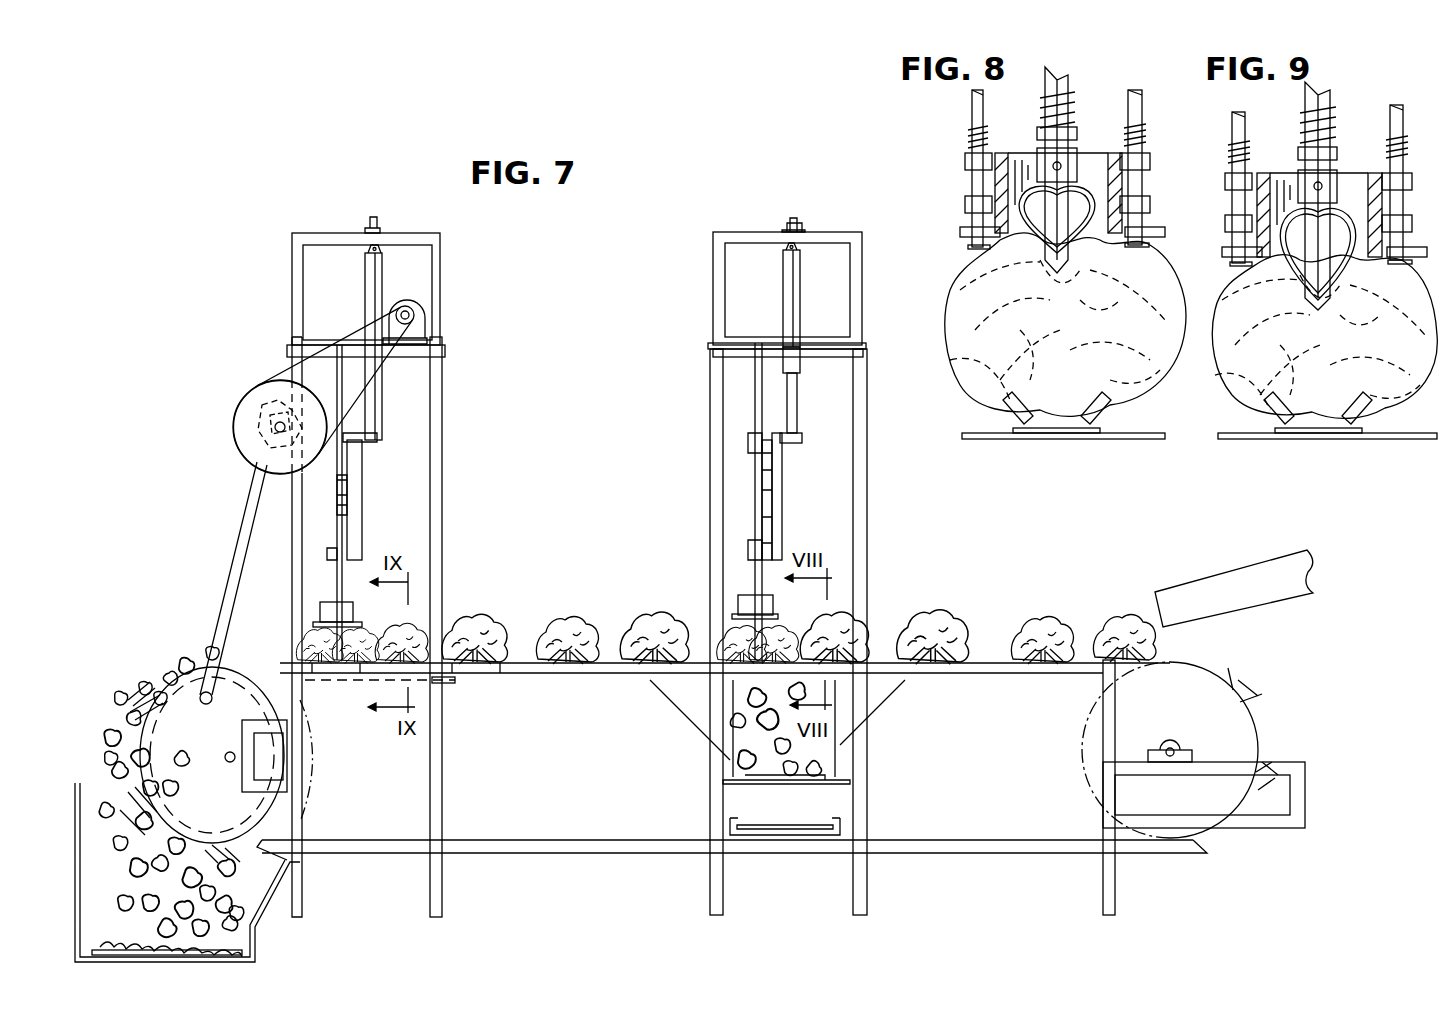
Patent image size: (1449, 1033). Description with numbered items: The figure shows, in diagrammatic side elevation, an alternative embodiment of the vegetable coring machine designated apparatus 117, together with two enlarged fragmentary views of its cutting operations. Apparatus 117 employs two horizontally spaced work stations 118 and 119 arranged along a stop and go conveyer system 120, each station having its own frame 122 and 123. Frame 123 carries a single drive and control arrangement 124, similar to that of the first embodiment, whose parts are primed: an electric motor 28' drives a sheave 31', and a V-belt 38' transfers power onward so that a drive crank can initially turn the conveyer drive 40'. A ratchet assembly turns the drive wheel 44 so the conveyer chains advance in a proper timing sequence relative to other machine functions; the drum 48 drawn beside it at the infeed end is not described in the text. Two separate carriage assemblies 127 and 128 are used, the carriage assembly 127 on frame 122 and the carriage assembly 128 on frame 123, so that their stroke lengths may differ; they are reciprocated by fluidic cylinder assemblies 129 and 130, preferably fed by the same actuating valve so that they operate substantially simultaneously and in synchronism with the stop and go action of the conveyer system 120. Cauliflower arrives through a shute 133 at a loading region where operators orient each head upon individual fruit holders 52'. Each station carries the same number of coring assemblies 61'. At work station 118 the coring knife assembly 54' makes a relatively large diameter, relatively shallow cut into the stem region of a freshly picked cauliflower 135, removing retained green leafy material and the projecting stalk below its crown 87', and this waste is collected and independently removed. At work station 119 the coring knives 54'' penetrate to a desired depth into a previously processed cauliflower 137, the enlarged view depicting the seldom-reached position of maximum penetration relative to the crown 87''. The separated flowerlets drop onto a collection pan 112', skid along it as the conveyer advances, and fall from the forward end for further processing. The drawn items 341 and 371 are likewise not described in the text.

In FIG. 7, the electric motor 28' is at (405, 300).
In FIG. 7, the sheave 31' is at (375, 380).
In FIG. 7, the V-belt 38' is at (335, 472).
In FIG. 7, the conveyer drive 40' is at (216, 583).
In FIG. 7, the drive wheel 44 is at (145, 732).
In FIG. 7, the waste drum 48 is at (228, 760).
In FIG. 7, the fruit holder 52' is at (781, 618).
In FIG. 8, the fruit holder 52' is at (1069, 413).
In FIG. 9, the fruit holder 52' is at (1327, 414).
In FIG. 8, the coring knife assembly 54' is at (1109, 219).
In FIG. 9, the coring knives 54'' is at (1267, 254).
In FIG. 7, the coring assembly 61' is at (725, 501).
In FIG. 8, the coring assembly 61' is at (1035, 170).
In FIG. 9, the coring assembly 61' is at (1296, 196).
In FIG. 8, the crown 87' is at (1009, 174).
In FIG. 9, the crown 87'' is at (1279, 187).
In FIG. 7, the collection pan 112' is at (380, 712).
In FIG. 7, the apparatus 117 is at (738, 232).
In FIG. 7, the work station 118 is at (855, 243).
In FIG. 8, the work station 118 is at (1112, 82).
In FIG. 7, the work station 119 is at (440, 287).
In FIG. 9, the work station 119 is at (1404, 120).
In FIG. 7, the stop and go conveyer system 120 is at (990, 660).
In FIG. 7, the frame 122 is at (860, 393).
In FIG. 7, the frame 123 is at (443, 445).
In FIG. 7, the drive and control arrangement 124 is at (258, 384).
In FIG. 7, the carriage assembly 127 is at (782, 490).
In FIG. 7, the carriage assembly 128 is at (363, 505).
In FIG. 7, the fluidic cylinder assembly 129 is at (786, 290).
In FIG. 7, the fluidic cylinder assembly 130 is at (366, 273).
In FIG. 7, the shute 133 is at (1256, 577).
In FIG. 7, the cauliflower 135 is at (835, 623).
In FIG. 8, the cauliflower 135 is at (983, 398).
In FIG. 9, the cauliflower 137 is at (1236, 298).
In FIG. 7, the wheel hub 341 is at (275, 431).
In FIG. 7, the drive wheel rim 371 is at (235, 432).